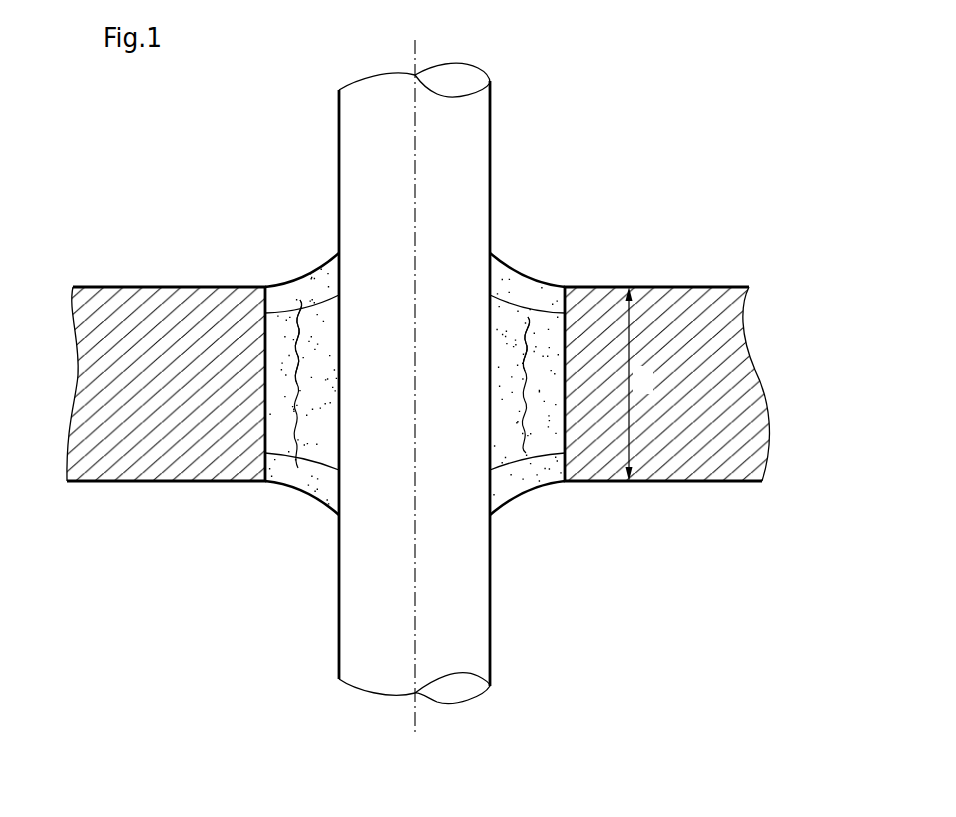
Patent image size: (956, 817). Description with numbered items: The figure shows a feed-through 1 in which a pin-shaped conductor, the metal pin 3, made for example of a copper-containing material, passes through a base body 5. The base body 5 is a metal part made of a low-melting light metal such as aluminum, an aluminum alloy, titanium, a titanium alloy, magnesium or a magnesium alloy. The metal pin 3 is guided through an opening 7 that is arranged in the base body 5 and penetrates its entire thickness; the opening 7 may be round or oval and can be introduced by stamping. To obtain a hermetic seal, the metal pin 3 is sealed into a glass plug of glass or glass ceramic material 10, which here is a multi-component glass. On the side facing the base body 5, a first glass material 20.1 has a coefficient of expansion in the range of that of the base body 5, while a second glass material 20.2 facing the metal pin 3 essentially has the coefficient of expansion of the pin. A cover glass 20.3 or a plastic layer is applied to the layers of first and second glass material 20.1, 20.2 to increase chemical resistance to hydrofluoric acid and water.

The feed-through 1 is at (592, 226).
The metal pin 3 is at (470, 114).
The base body 5 is at (720, 345).
The opening 7 is at (562, 275).
The glass or glass ceramic material 10 is at (302, 332).
The first glass material 20.1 is at (286, 345).
The second glass material 20.2 is at (505, 330).
The cover glass 20.3 is at (330, 342).